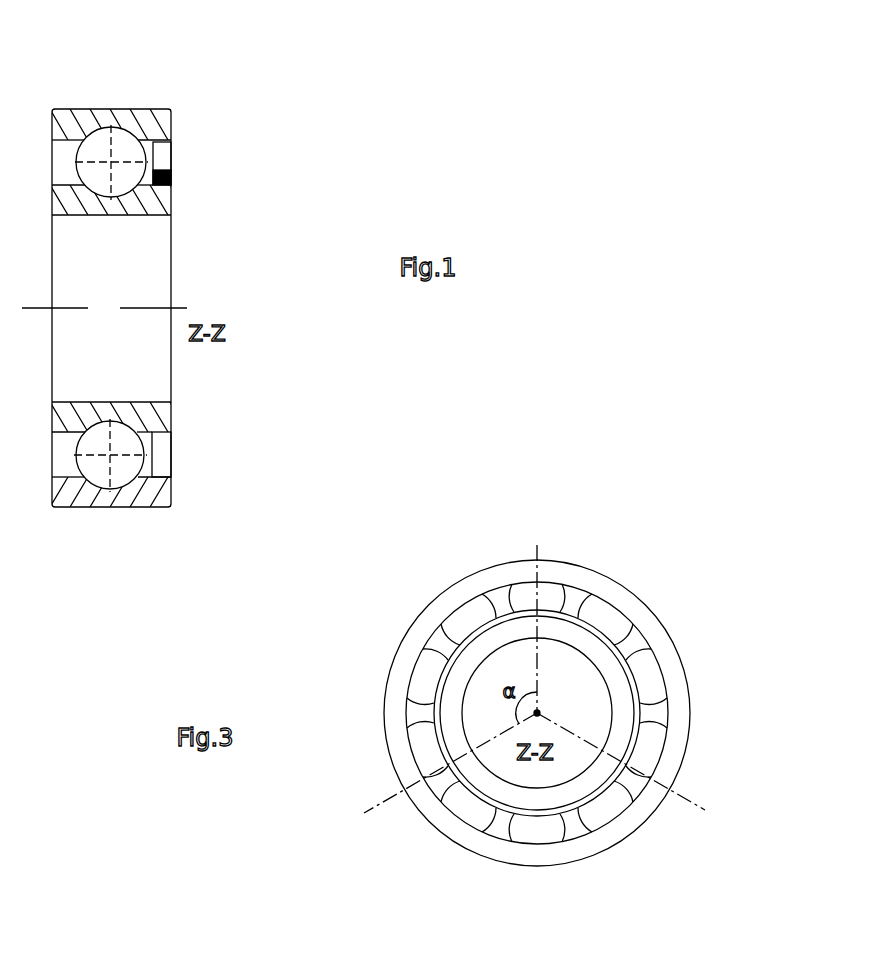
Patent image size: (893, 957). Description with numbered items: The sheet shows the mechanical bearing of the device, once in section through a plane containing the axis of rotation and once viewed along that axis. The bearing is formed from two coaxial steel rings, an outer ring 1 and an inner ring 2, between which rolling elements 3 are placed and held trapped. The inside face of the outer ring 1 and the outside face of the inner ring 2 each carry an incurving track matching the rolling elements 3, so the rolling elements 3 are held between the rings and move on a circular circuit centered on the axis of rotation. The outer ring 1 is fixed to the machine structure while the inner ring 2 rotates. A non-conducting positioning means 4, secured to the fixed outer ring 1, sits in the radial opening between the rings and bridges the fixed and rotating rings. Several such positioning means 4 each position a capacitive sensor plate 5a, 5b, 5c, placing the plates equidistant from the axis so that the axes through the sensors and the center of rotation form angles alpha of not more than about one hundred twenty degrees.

In FIG. 1, the outer ring 1 is at (190, 113).
In FIG. 3, the outer ring 1 is at (677, 637).
In FIG. 1, the inner ring 2 is at (190, 216).
In FIG. 3, the inner ring 2 is at (596, 632).
In FIG. 1, the rolling elements 3 is at (132, 124).
In FIG. 3, the rolling elements 3 is at (444, 619).
In FIG. 1, the non-conducting positioning means 4 is at (191, 151).
In FIG. 3, the non-conducting positioning means 4 is at (685, 720).
In FIG. 3, the capacitive sensor plate 5a is at (547, 592).
In FIG. 3, the capacitive sensor plate 5b is at (639, 775).
In FIG. 3, the capacitive sensor plate 5c is at (431, 759).